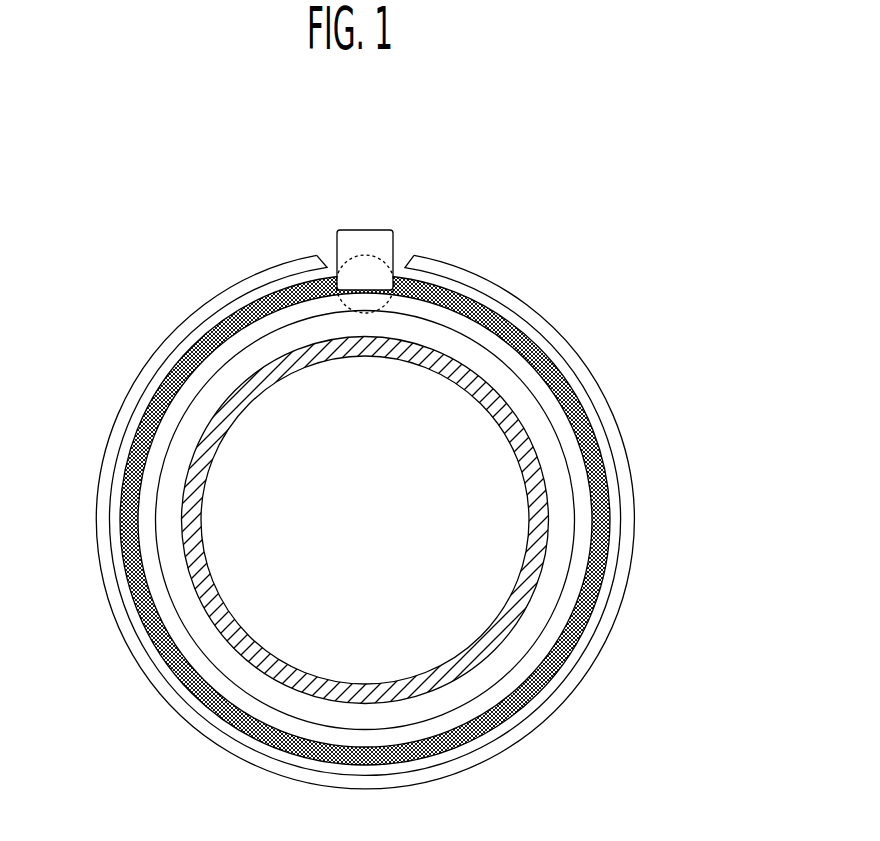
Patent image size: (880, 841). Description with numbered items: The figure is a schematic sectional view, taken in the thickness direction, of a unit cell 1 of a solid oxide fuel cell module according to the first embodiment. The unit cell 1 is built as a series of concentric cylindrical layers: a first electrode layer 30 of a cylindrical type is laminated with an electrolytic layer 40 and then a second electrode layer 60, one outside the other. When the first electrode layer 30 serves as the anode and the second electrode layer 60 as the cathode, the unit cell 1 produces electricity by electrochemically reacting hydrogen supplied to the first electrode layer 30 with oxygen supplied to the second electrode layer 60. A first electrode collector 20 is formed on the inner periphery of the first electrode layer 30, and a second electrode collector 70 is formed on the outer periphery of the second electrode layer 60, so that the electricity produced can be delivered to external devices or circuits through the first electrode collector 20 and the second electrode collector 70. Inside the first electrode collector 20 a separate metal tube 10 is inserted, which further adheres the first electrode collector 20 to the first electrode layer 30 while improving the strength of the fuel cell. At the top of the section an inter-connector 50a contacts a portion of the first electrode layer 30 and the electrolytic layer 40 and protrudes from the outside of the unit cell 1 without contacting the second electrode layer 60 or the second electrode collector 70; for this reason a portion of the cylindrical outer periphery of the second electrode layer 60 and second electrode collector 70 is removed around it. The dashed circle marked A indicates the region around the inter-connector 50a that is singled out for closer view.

The unit cell 1 is at (180, 180).
The metal tube 10 is at (522, 590).
The first electrode collector 20 is at (562, 545).
The first electrode layer 30 is at (582, 482).
The electrolytic layer 40 is at (598, 433).
The inter-connector 50a is at (383, 229).
The second electrode layer 60 is at (575, 378).
The second electrode collector 70 is at (574, 332).
The enlarged region A is at (395, 247).